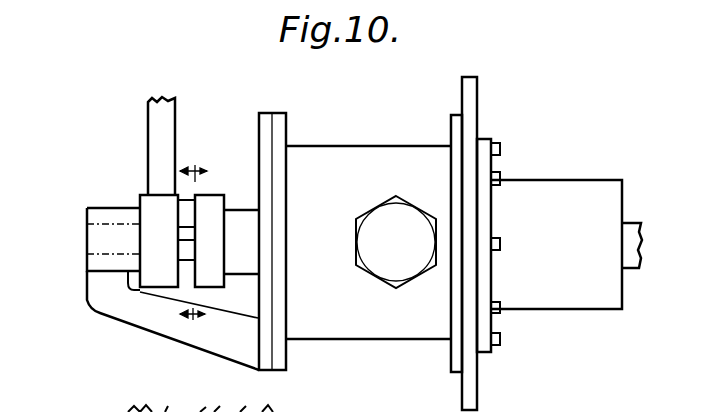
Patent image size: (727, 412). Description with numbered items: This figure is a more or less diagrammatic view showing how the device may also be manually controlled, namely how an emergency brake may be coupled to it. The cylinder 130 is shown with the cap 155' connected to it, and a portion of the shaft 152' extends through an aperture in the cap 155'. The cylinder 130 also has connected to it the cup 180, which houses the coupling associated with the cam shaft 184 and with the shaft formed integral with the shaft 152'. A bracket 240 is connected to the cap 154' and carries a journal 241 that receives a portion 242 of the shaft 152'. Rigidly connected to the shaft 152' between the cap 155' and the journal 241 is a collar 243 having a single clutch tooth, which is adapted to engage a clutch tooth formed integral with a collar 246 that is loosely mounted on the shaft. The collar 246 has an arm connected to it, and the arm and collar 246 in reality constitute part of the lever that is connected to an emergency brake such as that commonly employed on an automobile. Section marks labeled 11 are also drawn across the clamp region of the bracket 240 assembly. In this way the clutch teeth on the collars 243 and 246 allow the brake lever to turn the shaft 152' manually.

The section line 11 is at (193, 240).
The cylinder 130 is at (383, 322).
The shaft 152' is at (210, 203).
The cap 154' is at (250, 256).
The cap 155' is at (238, 286).
The cup 180 is at (580, 295).
The cam shaft 184 is at (630, 237).
The bracket 240 is at (129, 317).
The journal 241 is at (155, 128).
The portion of shaft 242 is at (107, 237).
The collar 243 is at (210, 277).
The collar 246 is at (150, 272).